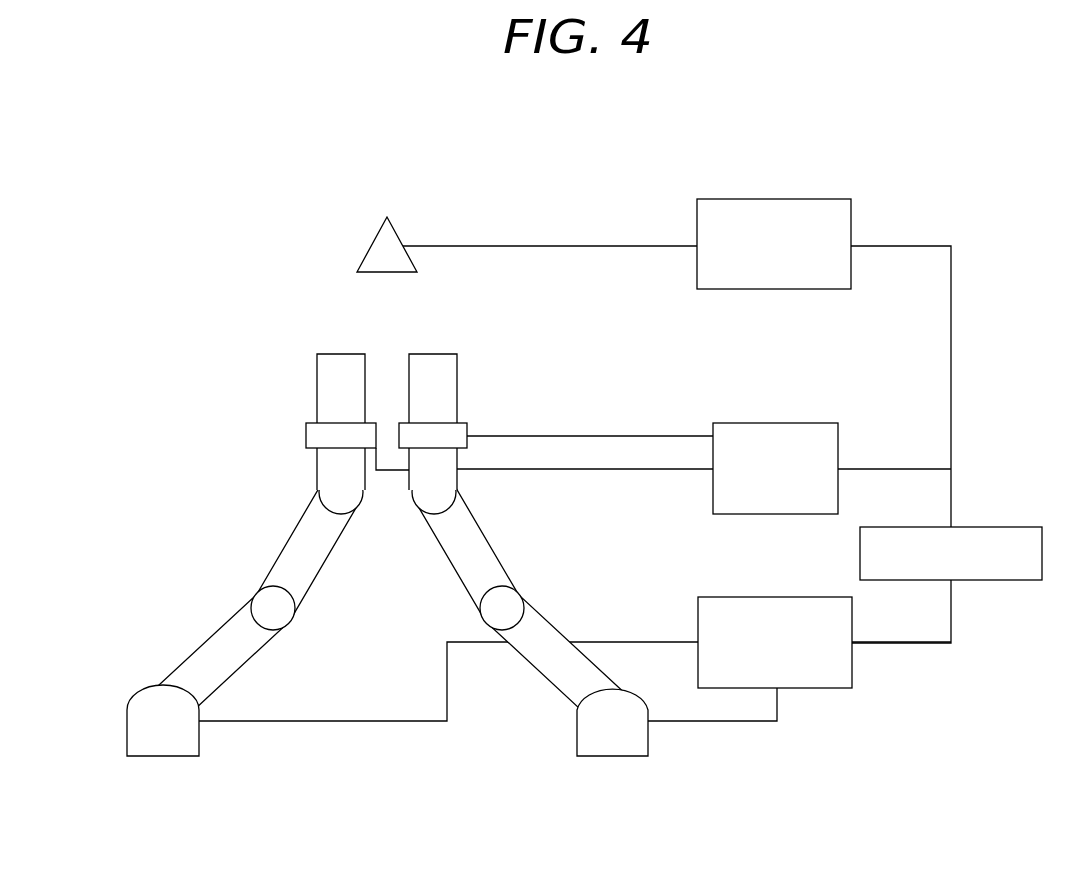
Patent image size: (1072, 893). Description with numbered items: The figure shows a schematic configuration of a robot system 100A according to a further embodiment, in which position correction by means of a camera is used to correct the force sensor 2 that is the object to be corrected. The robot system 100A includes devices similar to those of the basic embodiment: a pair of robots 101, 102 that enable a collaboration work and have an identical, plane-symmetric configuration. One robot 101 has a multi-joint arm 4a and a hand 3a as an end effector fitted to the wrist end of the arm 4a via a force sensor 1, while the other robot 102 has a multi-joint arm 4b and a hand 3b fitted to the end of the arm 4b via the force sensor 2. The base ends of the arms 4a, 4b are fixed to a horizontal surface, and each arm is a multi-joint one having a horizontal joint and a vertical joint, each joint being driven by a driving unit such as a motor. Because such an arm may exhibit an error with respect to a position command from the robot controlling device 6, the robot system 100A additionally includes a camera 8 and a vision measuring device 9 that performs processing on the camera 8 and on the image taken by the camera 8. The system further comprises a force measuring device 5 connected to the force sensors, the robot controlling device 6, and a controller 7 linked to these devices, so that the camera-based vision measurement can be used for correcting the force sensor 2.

The robot system 100A is at (520, 183).
The robot 101 is at (247, 536).
The robot 102 is at (532, 552).
The force sensor 1 is at (306, 432).
The force sensor 2 is at (467, 423).
The hand 3a is at (317, 372).
The hand 3b is at (457, 372).
The multi-joint arm 4a is at (127, 725).
The multi-joint arm 4b is at (577, 722).
The force measuring device 5 is at (745, 423).
The robot controlling device 6 is at (745, 597).
The controller 7 is at (860, 550).
The camera 8 is at (372, 242).
The vision measuring device 9 is at (744, 199).